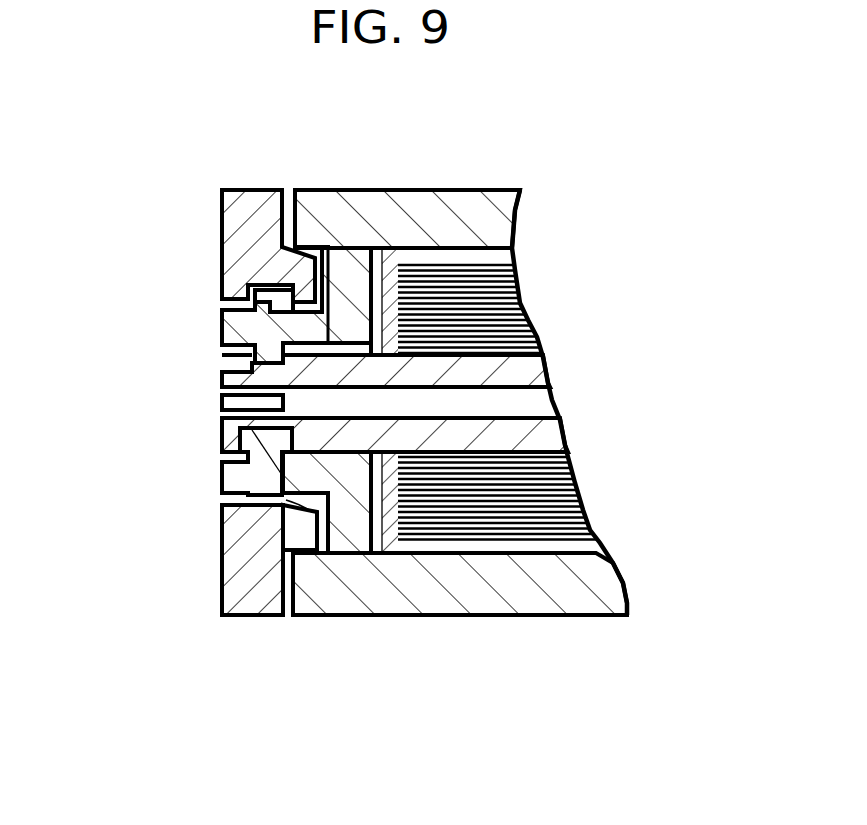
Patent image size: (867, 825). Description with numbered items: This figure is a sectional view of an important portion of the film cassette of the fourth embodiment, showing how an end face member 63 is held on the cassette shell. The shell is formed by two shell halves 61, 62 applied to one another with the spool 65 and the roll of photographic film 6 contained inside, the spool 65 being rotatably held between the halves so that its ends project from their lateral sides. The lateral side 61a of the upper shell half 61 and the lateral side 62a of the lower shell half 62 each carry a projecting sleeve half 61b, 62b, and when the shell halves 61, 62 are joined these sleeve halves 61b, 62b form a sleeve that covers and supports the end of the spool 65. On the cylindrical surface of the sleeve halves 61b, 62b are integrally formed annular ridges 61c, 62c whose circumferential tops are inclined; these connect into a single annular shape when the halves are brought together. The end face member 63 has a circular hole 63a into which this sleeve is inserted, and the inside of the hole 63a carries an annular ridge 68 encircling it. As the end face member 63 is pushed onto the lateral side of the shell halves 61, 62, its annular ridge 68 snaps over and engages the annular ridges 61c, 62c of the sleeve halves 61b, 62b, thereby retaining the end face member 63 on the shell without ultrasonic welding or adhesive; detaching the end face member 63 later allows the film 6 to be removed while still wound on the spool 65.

The photographic film 6 is at (557, 540).
The shell half 61 is at (437, 203).
The lateral side 61a is at (346, 194).
The sleeve half 61b is at (235, 328).
The annular ridge 61c is at (265, 283).
The shell half 62 is at (482, 592).
The lateral side 62a is at (319, 560).
The sleeve half 62b is at (228, 480).
The annular ridge 62c is at (285, 508).
The end face member 63 is at (223, 223).
The circular hole 63a is at (228, 302).
The spool 65 is at (228, 438).
The annular ridge 68 is at (290, 500).